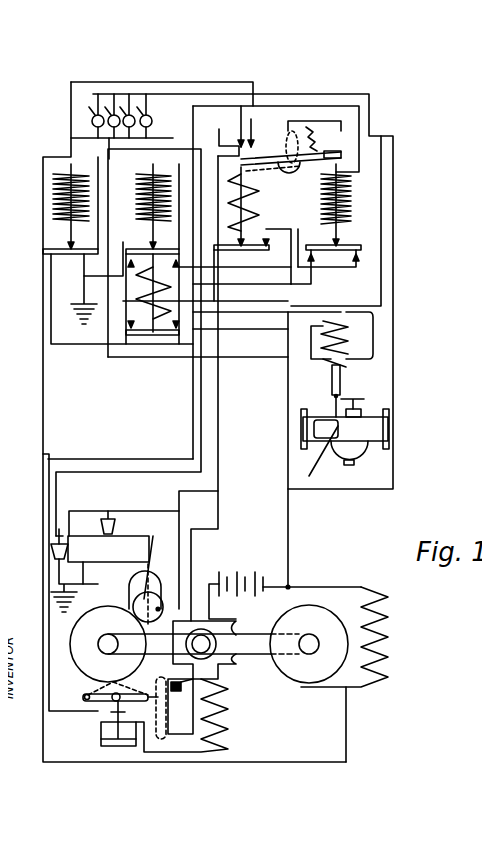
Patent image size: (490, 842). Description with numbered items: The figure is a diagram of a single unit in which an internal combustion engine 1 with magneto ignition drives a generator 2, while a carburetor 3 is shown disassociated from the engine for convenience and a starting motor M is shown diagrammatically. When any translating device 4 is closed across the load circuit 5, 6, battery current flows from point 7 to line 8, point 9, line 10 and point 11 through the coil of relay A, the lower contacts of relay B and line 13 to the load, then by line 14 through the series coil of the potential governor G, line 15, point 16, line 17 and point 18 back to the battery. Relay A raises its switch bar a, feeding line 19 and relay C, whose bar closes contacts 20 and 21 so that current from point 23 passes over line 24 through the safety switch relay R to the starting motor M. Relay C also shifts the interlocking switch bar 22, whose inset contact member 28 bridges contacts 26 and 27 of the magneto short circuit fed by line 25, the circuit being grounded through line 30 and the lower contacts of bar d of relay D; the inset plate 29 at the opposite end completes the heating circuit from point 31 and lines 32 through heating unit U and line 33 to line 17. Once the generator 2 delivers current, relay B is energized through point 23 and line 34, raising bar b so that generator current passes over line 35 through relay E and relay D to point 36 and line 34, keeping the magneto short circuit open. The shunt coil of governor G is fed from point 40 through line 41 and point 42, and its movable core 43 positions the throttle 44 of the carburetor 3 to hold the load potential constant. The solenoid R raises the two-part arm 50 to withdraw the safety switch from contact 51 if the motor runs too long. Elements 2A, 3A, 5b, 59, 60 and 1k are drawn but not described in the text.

The internal combustion engine 1 is at (170, 609).
The generator 2 is at (329, 645).
The conductor 2A is at (48, 612).
The carburetor 3 is at (323, 437).
The conductor 3A is at (314, 106).
The translating device 4 is at (130, 116).
The load circuit line 5 is at (165, 95).
The rocker block 5b is at (182, 714).
The load circuit line 6 is at (70, 139).
The point 7 is at (312, 576).
The line 8 is at (288, 544).
The point 9 is at (309, 449).
The line 10 is at (73, 346).
The point 11 is at (48, 256).
The line 13 is at (372, 219).
The line 14 is at (147, 360).
The line 15 is at (372, 370).
The point 16 is at (222, 325).
The line 17 is at (218, 430).
The point 18 is at (206, 578).
The line 19 is at (203, 150).
The contact 20 is at (278, 242).
The contact 21 is at (248, 299).
The interlocking switch bar 22 is at (266, 158).
The point 23 is at (292, 250).
The line 24 is at (200, 413).
The line 25 is at (345, 491).
The contact 26 is at (330, 150).
The contact 27 is at (340, 152).
The inset contact member 28 is at (355, 156).
The inset contact plate 29 is at (284, 173).
The line 30 is at (382, 260).
The point 31 is at (288, 506).
The lines 32 is at (130, 511).
The line 33 is at (248, 83).
The line 34 is at (208, 764).
The line 35 is at (262, 268).
The point 36 is at (192, 172).
The point 40 is at (287, 395).
The line 41 is at (318, 313).
The point 42 is at (193, 362).
The movable core 43 is at (340, 390).
The throttle 44 is at (322, 456).
The two-part arm 50 is at (97, 704).
The contact 51 is at (188, 674).
The conductor 59 is at (378, 328).
The conductor 60 is at (362, 330).
The relay A is at (52, 198).
The relay B is at (356, 200).
The relay C is at (245, 199).
The relay D is at (143, 253).
The relay E is at (145, 294).
The potential governor G is at (356, 351).
The starting motor M is at (225, 676).
The safety switch relay R is at (100, 745).
The heating unit U is at (50, 558).
The switch bar a is at (92, 260).
The switch bar b is at (326, 264).
The switch bar d is at (152, 289).
The conductor 1k is at (110, 150).